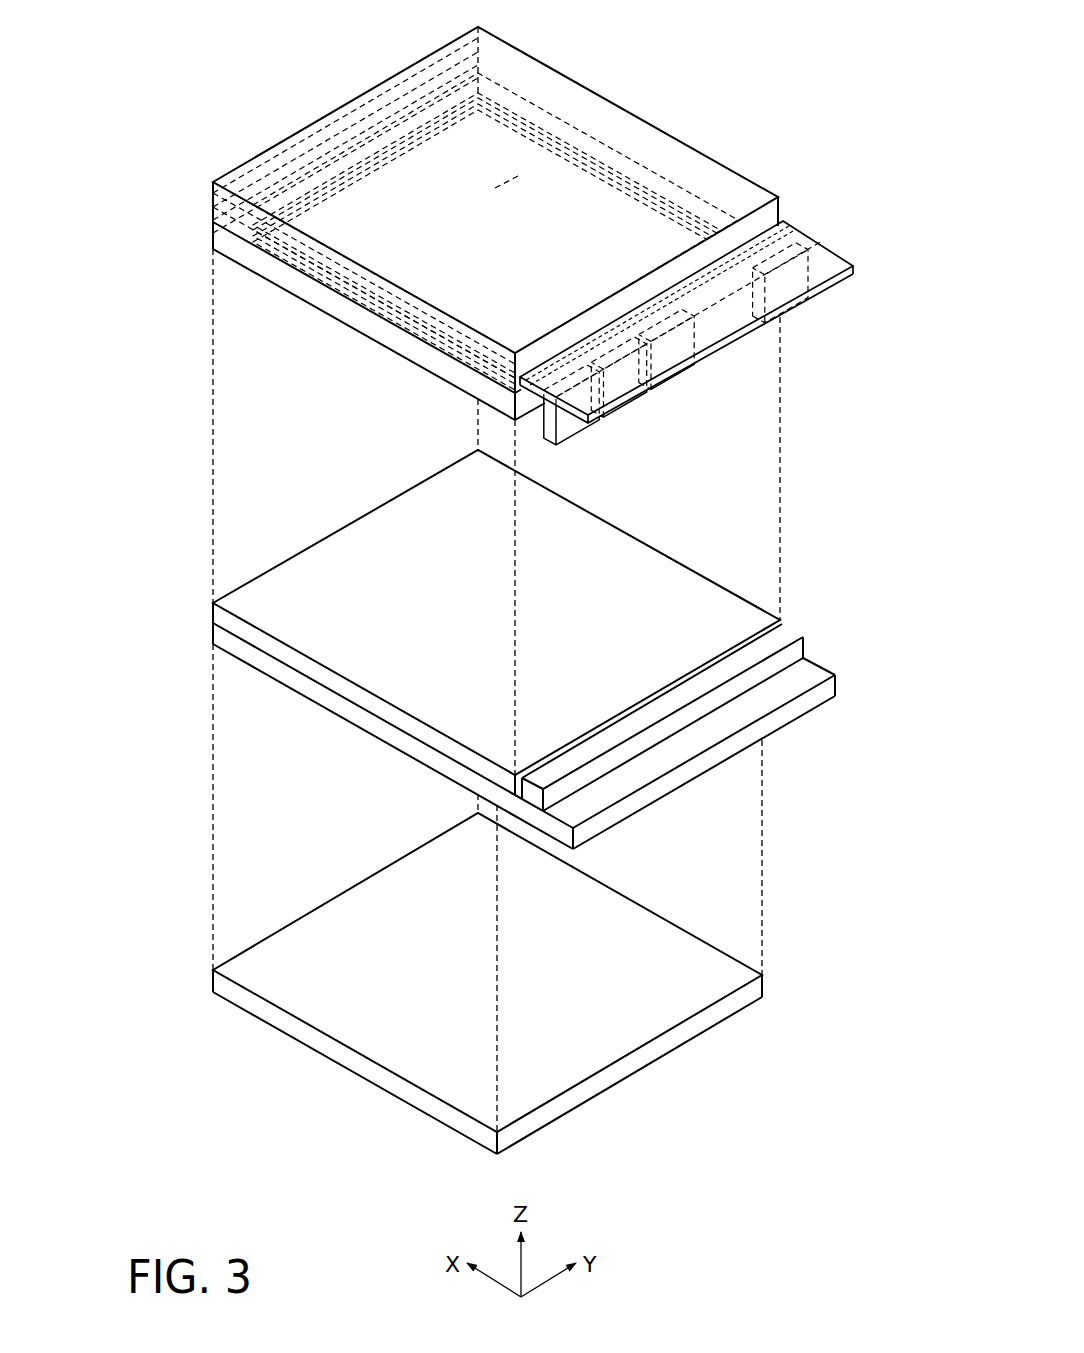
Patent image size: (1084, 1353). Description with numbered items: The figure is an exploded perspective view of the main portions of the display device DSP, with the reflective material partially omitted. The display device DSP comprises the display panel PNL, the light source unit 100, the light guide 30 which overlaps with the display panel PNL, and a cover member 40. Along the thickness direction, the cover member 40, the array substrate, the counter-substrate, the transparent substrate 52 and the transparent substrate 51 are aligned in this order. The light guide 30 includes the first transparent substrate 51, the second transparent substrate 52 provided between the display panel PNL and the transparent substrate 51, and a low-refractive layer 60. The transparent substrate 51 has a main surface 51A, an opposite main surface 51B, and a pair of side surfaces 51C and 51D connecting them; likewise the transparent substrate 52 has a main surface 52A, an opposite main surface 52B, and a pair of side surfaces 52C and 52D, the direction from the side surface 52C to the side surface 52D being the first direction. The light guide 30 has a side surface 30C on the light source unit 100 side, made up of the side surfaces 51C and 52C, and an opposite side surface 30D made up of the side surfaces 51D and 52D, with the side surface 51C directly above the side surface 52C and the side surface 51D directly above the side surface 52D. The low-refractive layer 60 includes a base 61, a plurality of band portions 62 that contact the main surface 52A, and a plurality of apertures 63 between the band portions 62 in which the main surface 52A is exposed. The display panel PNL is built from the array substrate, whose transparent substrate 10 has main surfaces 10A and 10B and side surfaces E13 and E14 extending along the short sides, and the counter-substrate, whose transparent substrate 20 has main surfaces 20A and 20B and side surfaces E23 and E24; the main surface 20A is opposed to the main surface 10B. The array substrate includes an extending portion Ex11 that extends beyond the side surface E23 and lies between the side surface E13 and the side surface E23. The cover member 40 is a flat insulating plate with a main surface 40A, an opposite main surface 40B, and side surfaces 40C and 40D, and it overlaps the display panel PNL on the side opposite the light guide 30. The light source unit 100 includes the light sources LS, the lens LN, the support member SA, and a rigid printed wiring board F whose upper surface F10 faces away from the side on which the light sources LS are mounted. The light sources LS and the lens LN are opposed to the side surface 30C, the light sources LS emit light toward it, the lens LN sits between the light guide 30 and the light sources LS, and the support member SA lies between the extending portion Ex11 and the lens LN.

The display device DSP is at (853, 69).
The light source unit 100 is at (880, 198).
The light guide 30 is at (775, 162).
The side surface 30C is at (700, 455).
The side surface 30D is at (118, 188).
The transparent substrate 51 is at (208, 198).
The main surface 51A is at (391, 320).
The main surface 51B is at (395, 285).
The side surface 51C is at (524, 368).
The side surface 51D is at (210, 204).
The transparent substrate 52 is at (211, 246).
The main surface 52A is at (323, 312).
The main surface 52B is at (318, 289).
The side surface 52C is at (525, 408).
The side surface 52D is at (210, 237).
The low-refractive layer 60 is at (446, 129).
The base 61 is at (262, 152).
The band portions 62 is at (298, 215).
The apertures 63 is at (325, 230).
The wiring board F is at (871, 263).
The upper surface F10 is at (846, 251).
The lens LN is at (806, 227).
The light sources LS is at (692, 378).
The display panel PNL is at (183, 548).
The transparent substrate 20 is at (236, 627).
The main surface 20A is at (362, 702).
The main surface 20B is at (408, 723).
The side surface E23 is at (526, 783).
The side surface E24 is at (209, 611).
The support member SA is at (790, 632).
The transparent substrate 10 is at (226, 647).
The main surface 10A is at (262, 675).
The main surface 10B is at (293, 672).
The side surface E13 is at (649, 800).
The side surface E14 is at (208, 634).
The extending portion Ex11 is at (833, 667).
The cover member 40 is at (419, 1098).
The main surface 40A is at (243, 1011).
The main surface 40B is at (309, 1017).
The side surface 40C is at (548, 1115).
The side surface 40D is at (210, 979).